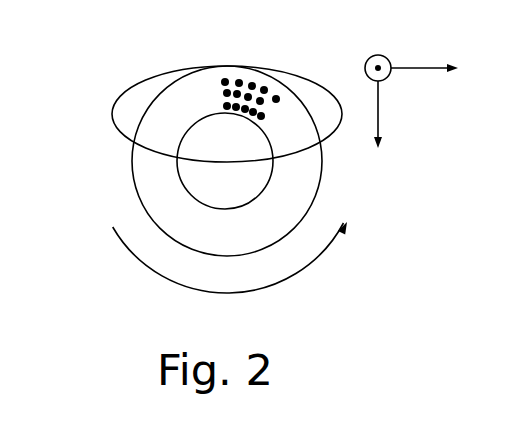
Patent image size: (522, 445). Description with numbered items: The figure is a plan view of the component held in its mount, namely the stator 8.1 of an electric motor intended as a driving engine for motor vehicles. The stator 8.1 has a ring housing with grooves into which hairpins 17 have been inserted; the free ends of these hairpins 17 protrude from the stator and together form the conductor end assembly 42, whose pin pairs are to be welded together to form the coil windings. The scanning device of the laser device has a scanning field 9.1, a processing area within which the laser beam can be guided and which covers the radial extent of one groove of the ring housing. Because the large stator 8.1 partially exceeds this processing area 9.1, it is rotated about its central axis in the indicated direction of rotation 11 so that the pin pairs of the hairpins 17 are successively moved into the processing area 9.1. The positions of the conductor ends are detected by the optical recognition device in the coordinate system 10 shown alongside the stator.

The stator 8.1 is at (320, 177).
The conductor end assembly 42 is at (145, 187).
The scanning field 9.1 is at (112, 105).
The hairpins 17 is at (227, 65).
The direction of rotation 11 is at (230, 278).
The coordinate system 10 is at (433, 103).